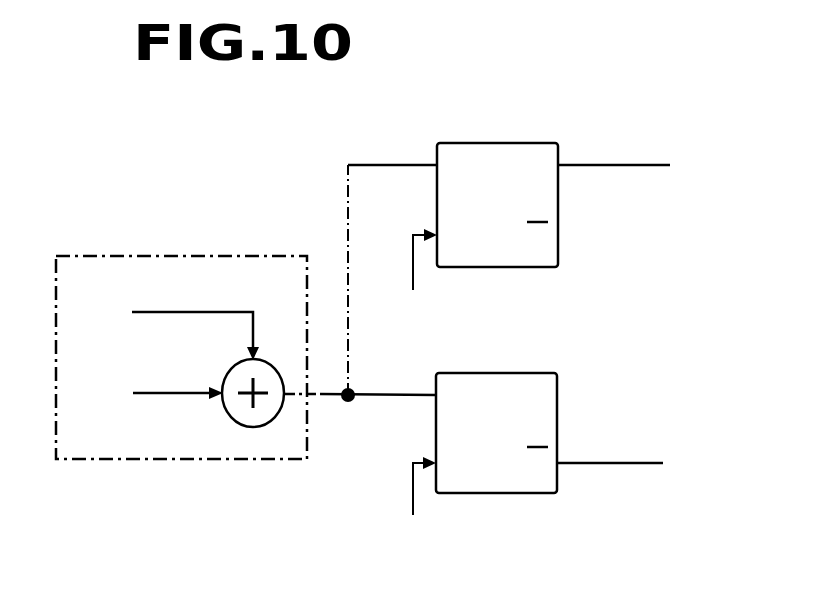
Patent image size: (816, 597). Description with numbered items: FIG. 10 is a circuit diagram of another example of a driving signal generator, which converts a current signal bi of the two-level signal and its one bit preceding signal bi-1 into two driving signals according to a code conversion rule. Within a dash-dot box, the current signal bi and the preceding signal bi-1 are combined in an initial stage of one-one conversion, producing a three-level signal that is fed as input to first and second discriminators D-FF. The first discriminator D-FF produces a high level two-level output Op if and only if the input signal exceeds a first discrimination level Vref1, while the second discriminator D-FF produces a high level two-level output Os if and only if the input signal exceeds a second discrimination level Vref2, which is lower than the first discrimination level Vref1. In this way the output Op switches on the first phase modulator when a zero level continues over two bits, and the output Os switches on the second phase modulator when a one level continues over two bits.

The current signal bi is at (179, 326).
The one bit preceding signal bi-1 is at (153, 388).
The discriminator D-FF is at (497, 301).
The first discrimination level Vref1 is at (426, 277).
The second discrimination level Vref2 is at (426, 505).
The driving signal Op is at (637, 172).
The driving signal Os is at (635, 469).